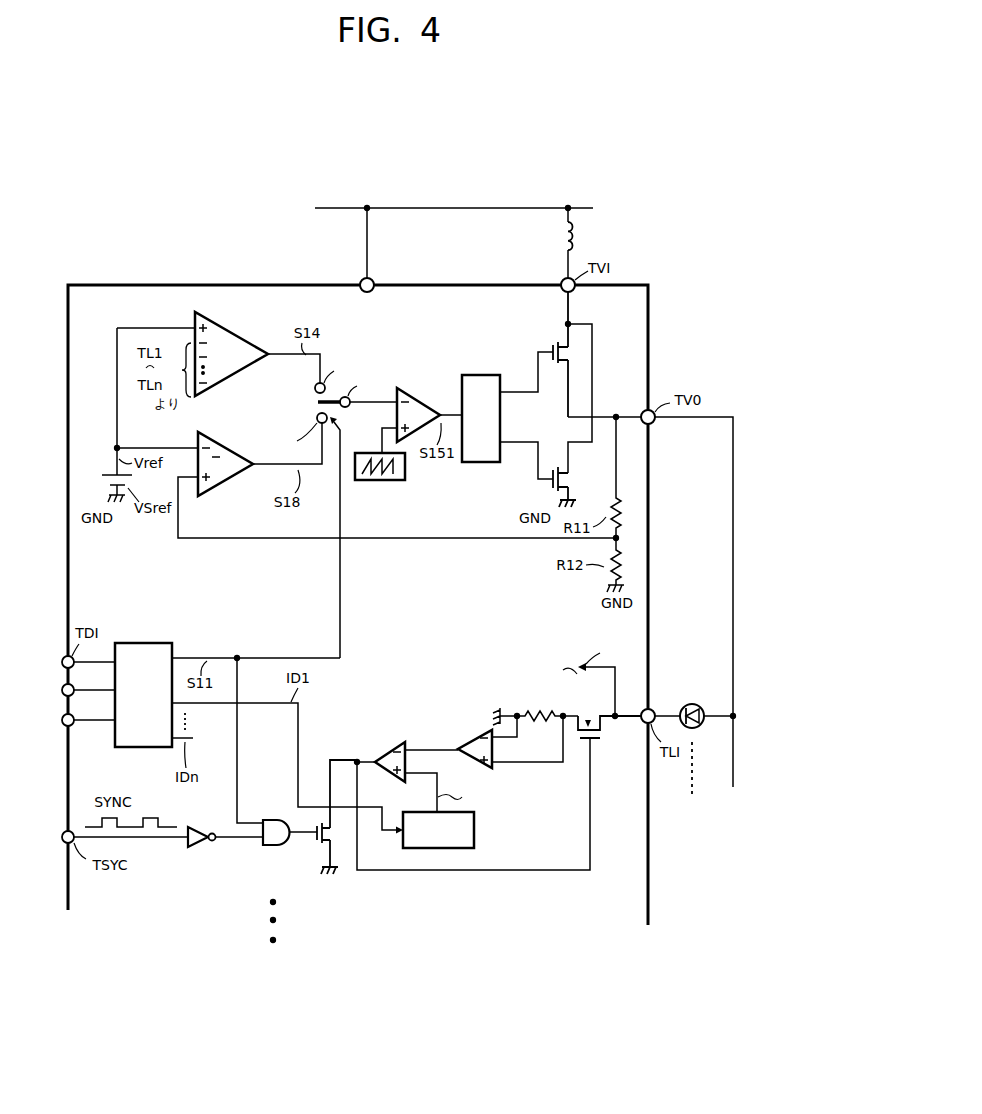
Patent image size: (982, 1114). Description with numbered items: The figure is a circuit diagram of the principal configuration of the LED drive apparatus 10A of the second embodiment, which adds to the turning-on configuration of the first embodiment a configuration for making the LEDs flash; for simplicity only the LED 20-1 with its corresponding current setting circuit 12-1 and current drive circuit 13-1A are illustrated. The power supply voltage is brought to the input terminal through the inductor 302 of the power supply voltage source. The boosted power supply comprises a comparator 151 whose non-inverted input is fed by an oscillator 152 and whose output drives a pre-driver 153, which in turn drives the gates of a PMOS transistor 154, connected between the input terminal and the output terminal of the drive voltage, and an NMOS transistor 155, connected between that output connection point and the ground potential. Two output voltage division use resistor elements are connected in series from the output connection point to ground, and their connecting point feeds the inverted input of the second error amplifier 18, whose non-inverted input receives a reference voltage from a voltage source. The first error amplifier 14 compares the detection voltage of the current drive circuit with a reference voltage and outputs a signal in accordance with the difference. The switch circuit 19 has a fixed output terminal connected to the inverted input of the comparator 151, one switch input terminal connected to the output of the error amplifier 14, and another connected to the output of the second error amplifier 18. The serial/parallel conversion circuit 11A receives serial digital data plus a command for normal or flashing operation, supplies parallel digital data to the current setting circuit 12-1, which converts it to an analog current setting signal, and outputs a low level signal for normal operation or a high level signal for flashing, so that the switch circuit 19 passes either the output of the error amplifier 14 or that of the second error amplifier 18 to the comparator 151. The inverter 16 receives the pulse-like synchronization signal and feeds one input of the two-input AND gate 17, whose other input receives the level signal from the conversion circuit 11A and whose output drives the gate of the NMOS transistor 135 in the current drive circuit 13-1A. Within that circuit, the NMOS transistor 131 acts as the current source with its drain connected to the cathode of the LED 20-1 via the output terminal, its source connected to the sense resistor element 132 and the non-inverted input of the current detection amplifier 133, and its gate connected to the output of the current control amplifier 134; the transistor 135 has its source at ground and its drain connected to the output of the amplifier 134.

The LED drive apparatus 10A is at (217, 284).
The inductor 302 is at (562, 243).
The error amplifier 14 is at (233, 330).
The second error amplifier 18 is at (226, 482).
The switch circuit 19 is at (292, 402).
The comparator 151 is at (422, 402).
The oscillator 152 is at (405, 469).
The pre-driver 153 is at (484, 375).
The PMOS transistor 154 is at (551, 344).
The NMOS transistor 155 is at (550, 485).
The serial/parallel conversion circuit 11A is at (143, 643).
The inverter 16 is at (202, 846).
The 2-input AND gate 17 is at (278, 820).
The NMOS transistor 135 is at (313, 843).
The current control amplifier 134 is at (388, 753).
The current detection amplifier 133 is at (466, 740).
The sense resistor element 132 is at (540, 712).
The NMOS transistor 131 is at (603, 735).
The current setting circuit 12-1 is at (474, 830).
The current drive circuit 13-1A is at (456, 766).
The LED 20-1 is at (694, 703).